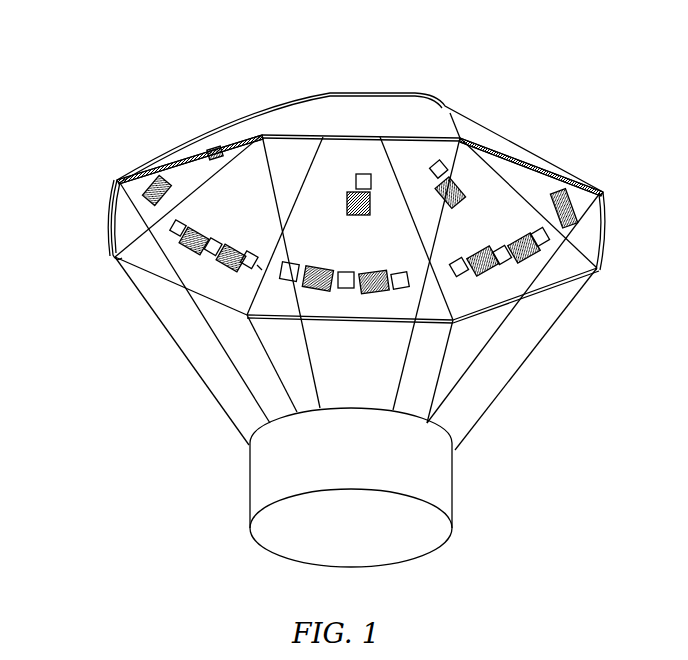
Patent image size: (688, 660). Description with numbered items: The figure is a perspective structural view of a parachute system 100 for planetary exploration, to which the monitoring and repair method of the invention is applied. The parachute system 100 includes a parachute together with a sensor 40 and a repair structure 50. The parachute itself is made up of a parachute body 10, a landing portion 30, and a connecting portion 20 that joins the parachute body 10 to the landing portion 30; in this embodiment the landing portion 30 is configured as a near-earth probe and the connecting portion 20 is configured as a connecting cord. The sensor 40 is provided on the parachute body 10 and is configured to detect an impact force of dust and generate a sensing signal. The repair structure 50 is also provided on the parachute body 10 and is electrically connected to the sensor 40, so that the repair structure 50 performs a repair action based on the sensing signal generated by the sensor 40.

The parachute system 100 is at (488, 98).
The parachute body 10 is at (533, 158).
The connecting portion 20 is at (513, 370).
The landing portion 30 is at (437, 477).
The sensor 40 is at (172, 230).
The repair structure 50 is at (186, 236).